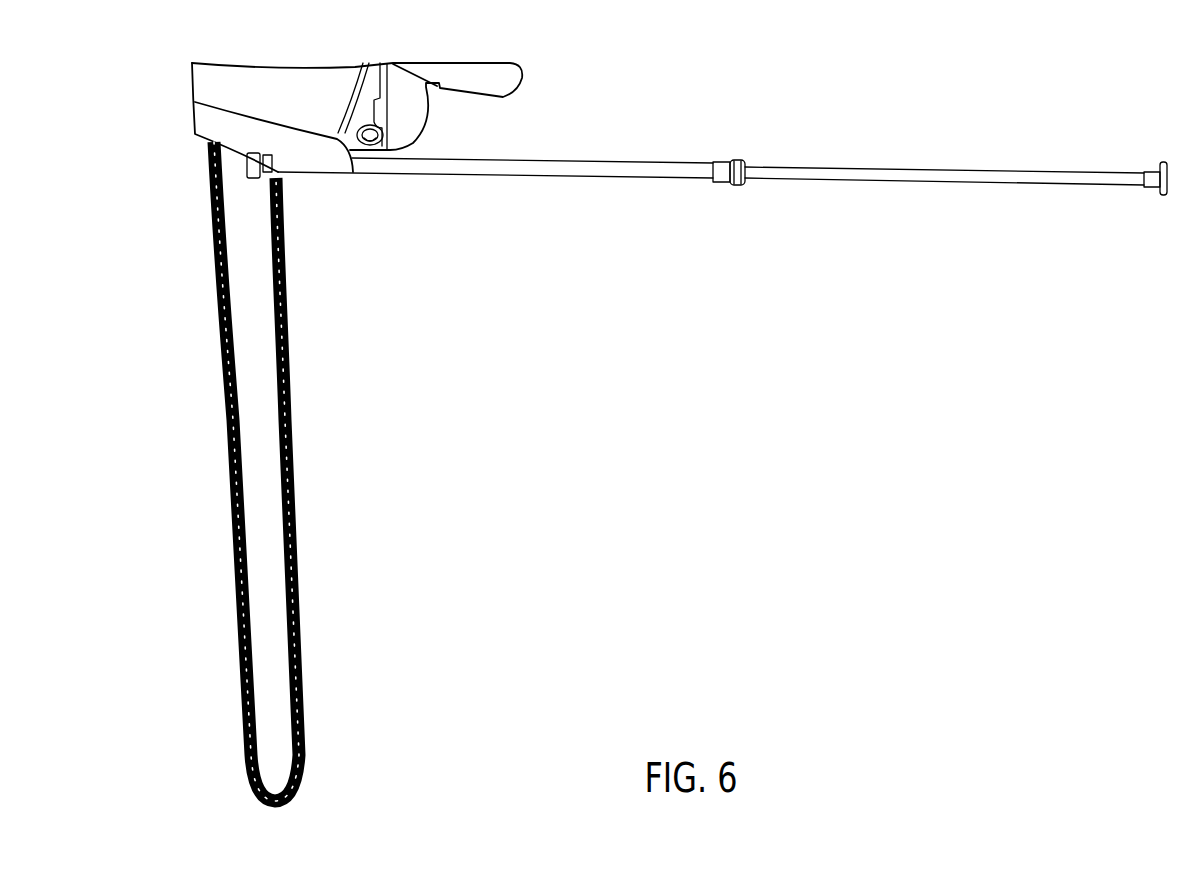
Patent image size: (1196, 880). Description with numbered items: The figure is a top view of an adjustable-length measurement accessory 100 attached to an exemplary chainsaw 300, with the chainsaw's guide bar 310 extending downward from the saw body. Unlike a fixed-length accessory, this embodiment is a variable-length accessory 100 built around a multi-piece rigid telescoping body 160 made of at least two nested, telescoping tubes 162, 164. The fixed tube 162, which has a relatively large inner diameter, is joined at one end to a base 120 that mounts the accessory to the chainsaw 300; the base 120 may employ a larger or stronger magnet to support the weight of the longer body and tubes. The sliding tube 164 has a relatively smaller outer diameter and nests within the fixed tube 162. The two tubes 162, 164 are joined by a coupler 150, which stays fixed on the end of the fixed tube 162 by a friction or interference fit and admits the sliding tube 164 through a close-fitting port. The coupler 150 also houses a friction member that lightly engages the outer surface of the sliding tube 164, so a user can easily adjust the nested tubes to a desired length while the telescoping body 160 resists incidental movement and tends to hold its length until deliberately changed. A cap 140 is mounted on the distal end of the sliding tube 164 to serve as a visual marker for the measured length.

The measurement accessory 100 is at (707, 206).
The base 120 is at (276, 175).
The cap 140 is at (1165, 194).
The coupler 150 is at (723, 182).
The telescoping body 160 is at (711, 203).
The fixed tube 162 is at (600, 172).
The sliding tube 164 is at (887, 178).
The chainsaw 300 is at (295, 87).
The guide bar 310 is at (265, 477).